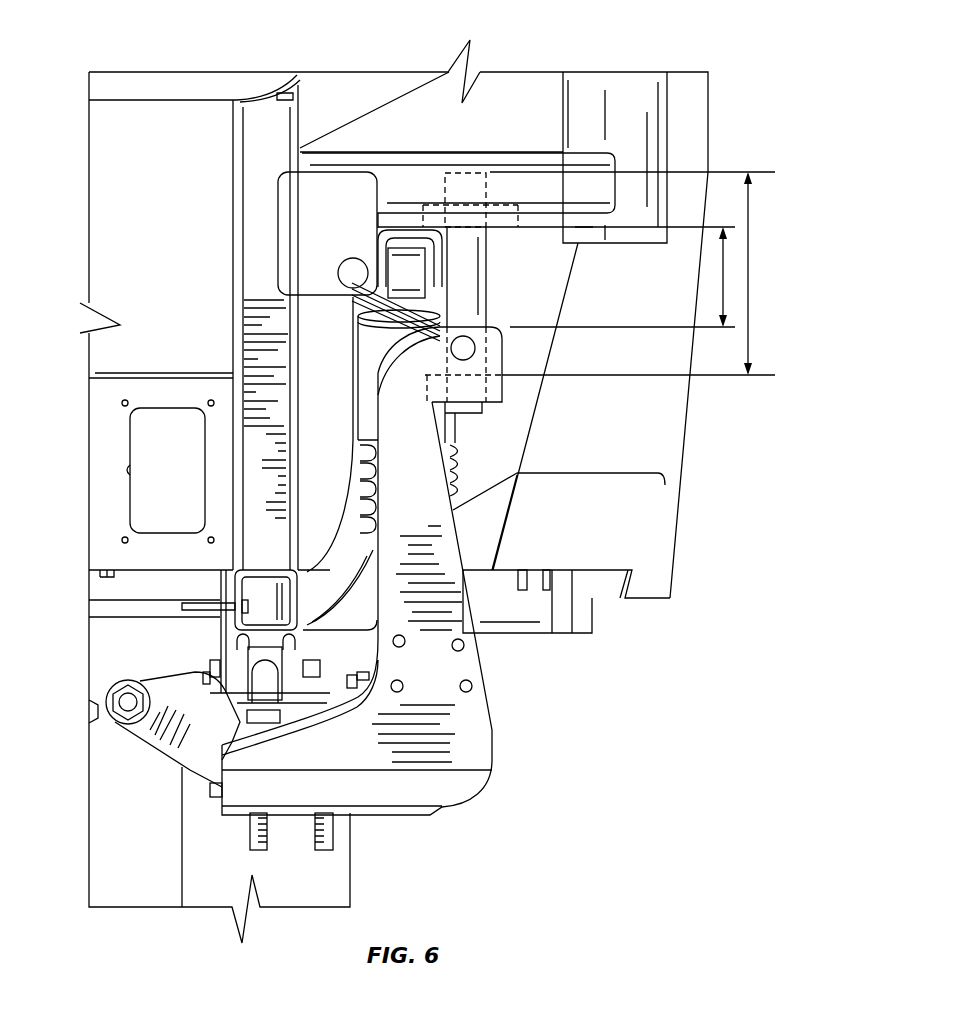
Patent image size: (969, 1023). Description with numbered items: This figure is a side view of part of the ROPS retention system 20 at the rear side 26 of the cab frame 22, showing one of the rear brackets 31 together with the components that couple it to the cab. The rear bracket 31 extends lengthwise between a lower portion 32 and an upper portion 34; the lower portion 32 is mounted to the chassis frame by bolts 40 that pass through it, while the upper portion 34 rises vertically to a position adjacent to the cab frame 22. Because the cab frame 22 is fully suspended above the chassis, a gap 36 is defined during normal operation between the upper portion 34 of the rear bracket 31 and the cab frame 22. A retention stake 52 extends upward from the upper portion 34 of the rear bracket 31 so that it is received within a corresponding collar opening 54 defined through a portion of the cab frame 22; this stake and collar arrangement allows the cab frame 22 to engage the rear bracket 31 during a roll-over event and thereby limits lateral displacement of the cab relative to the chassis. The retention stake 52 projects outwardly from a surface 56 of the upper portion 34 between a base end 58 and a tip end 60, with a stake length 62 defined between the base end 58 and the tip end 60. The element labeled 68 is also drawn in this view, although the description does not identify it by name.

The ROPS retention system 20 is at (616, 812).
The cab frame 22 is at (627, 70).
The rear side 26 is at (108, 245).
The rear bracket 31 is at (482, 667).
The lower portion 32 is at (452, 807).
The upper portion 34 is at (390, 393).
The gap 36 is at (723, 278).
The bolts 40 is at (315, 837).
The retention stake 52 is at (470, 283).
The collar opening 54 is at (425, 218).
The surface 56 is at (440, 375).
The base end 58 is at (503, 345).
The tip end 60 is at (462, 172).
The stake length 62 is at (748, 212).
The pivot block 68 is at (353, 310).